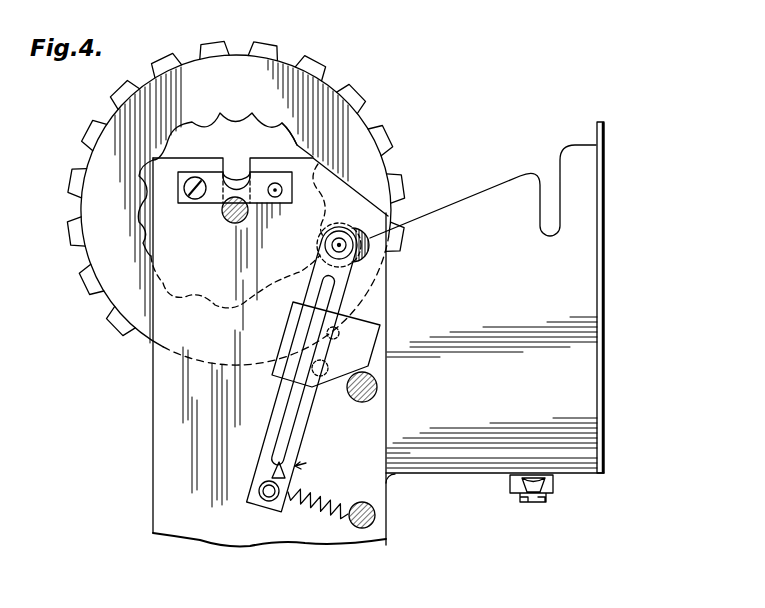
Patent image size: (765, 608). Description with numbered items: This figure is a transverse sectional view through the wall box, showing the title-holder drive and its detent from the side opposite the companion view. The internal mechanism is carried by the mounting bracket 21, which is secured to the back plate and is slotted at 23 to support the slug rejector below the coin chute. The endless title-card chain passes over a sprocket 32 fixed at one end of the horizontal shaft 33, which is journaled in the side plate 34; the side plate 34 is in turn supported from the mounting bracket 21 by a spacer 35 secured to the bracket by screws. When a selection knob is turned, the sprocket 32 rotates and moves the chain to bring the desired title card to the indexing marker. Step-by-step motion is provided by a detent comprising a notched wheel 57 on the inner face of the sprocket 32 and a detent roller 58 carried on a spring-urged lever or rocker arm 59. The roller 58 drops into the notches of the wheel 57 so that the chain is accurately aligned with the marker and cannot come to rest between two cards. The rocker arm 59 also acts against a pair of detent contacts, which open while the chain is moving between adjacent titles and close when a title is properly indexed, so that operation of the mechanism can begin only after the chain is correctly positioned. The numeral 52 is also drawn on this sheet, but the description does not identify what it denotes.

The mounting bracket 21 is at (580, 294).
The slot 23 is at (556, 182).
The sprocket 32 is at (237, 70).
The horizontal shaft 33 is at (228, 226).
The side plate 34 is at (168, 437).
The spacer 35 is at (378, 391).
The notched wheel 57 is at (293, 133).
The detent roller 58 is at (360, 233).
The rocker arm 59 is at (343, 283).
The component 52 is at (92, 602).